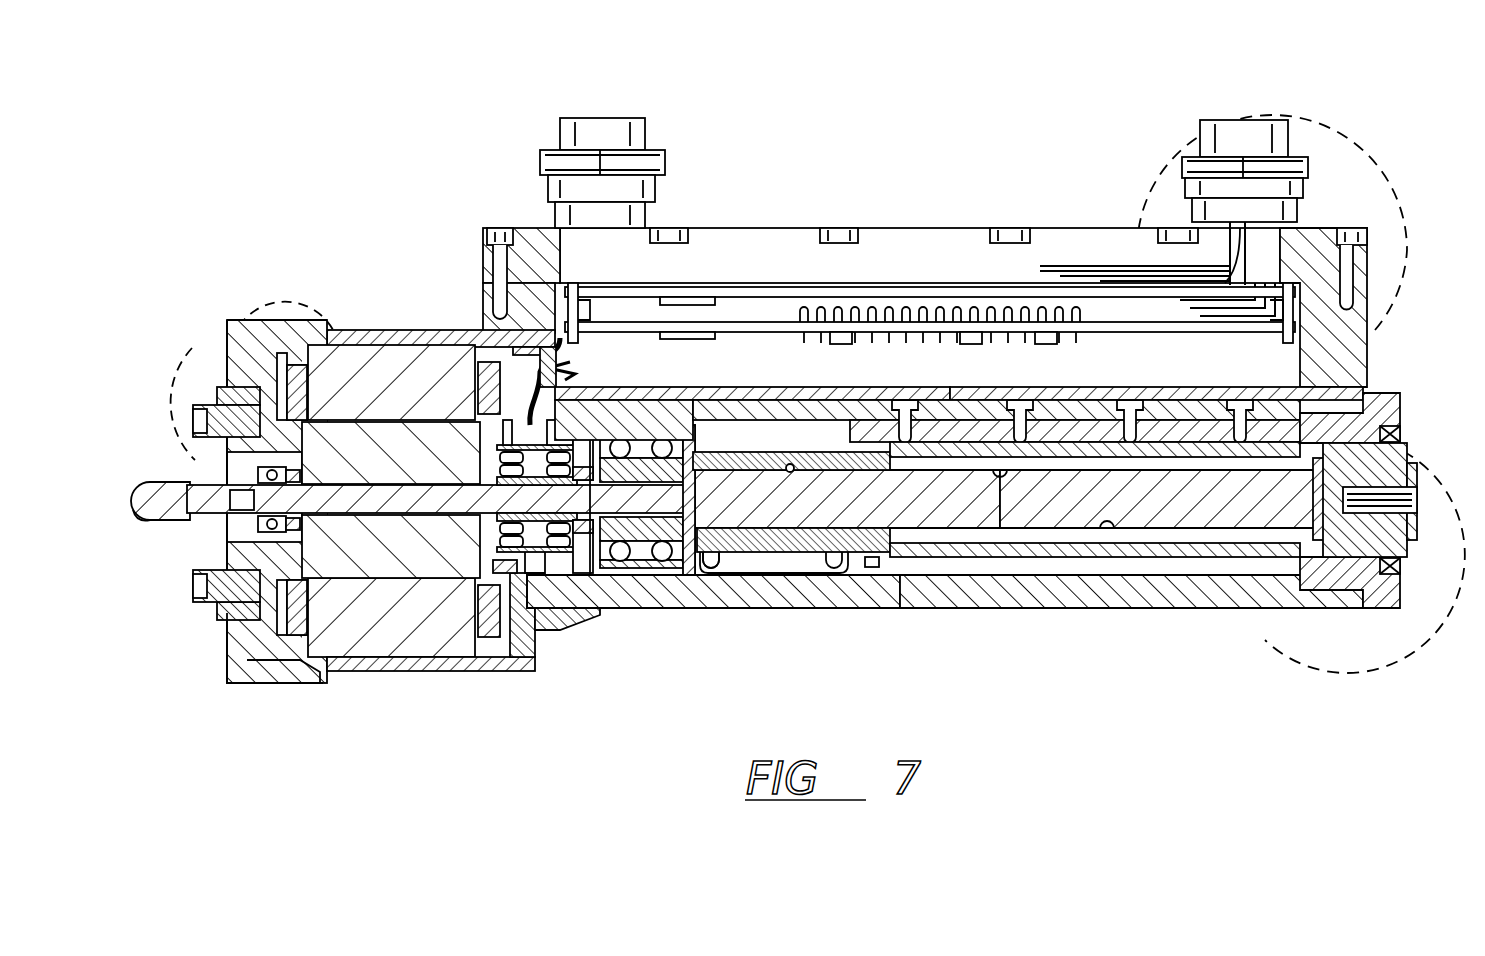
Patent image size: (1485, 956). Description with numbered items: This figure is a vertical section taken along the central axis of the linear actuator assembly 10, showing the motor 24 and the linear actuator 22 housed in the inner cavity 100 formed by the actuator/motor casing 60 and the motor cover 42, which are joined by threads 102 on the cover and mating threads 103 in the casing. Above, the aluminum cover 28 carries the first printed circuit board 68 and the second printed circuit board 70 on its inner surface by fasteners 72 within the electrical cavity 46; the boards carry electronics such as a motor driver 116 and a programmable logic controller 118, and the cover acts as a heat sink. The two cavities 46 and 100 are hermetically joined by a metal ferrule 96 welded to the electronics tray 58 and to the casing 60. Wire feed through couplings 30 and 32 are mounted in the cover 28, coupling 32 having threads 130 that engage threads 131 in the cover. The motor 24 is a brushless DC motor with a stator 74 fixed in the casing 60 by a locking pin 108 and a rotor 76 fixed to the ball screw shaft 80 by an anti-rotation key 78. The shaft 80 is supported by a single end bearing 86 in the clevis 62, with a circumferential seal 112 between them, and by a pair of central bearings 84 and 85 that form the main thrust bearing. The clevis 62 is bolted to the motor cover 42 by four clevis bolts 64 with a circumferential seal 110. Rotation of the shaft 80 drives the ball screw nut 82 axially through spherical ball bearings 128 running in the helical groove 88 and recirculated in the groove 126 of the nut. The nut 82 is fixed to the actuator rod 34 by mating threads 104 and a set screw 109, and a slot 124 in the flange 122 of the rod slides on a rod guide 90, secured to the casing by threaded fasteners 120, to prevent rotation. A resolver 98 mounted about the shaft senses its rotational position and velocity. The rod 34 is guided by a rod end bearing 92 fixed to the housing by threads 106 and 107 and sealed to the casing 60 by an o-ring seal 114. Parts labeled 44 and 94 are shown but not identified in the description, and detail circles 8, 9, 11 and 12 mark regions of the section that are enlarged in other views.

The linear actuator assembly 10 is at (905, 78).
The linear actuator 22 is at (1030, 608).
The motor 24 is at (393, 672).
The cover 28 is at (930, 263).
The wire feed through coupling 30 is at (600, 118).
The wire feed through coupling 32 is at (1243, 120).
The actuator rod 34 is at (1425, 520).
The motor cover 42 is at (232, 322).
The bolts 44 is at (504, 228).
The inner cavity 46 is at (806, 376).
The electronics tray 58 is at (1372, 335).
The actuator/motor casing 60 is at (1140, 608).
The clevis 62 is at (150, 482).
The clevis bolts 64 is at (193, 412).
The first printed circuit board 68 is at (808, 287).
The second printed circuit board 70 is at (748, 322).
The fasteners 72 is at (848, 343).
The stator 74 is at (438, 350).
The rotor 76 is at (345, 437).
The anti-rotation key 78 is at (405, 482).
The ball screw shaft 80 is at (992, 528).
The ball screw nut 82 is at (786, 552).
The bearing 84 is at (636, 568).
The bearing 85 is at (676, 575).
The end bearing 86 is at (262, 530).
The helical groove 88 is at (1108, 557).
The rod guide 90 is at (966, 408).
The rod end bearing 92 is at (1383, 395).
The seal 94 is at (1403, 437).
The metal ferrule 96 is at (578, 372).
The resolver 98 is at (556, 575).
The inner cavity 100 is at (716, 575).
The threads 102 is at (290, 415).
The mating threads 103 is at (297, 500).
The mating threads 104 is at (912, 608).
The threads 106 is at (1305, 590).
The complementary threads 107 is at (1324, 582).
The locking pin 108 is at (318, 683).
The set screw 109 is at (872, 568).
The circumferential seal 110 is at (252, 620).
The circumferential seal 112 is at (300, 546).
The o-ring seal 114 is at (1352, 608).
The motor driver 116 is at (690, 297).
The programmable logic controller 118 is at (698, 339).
The threaded fasteners 120 is at (1128, 410).
The flange 122 is at (850, 580).
The slot 124 is at (855, 449).
The raceway or groove 126 is at (790, 452).
The spherical ball bearings 128 is at (792, 473).
The threads 130 is at (1288, 237).
The threads 131 is at (1227, 269).
The detail callout 8 is at (182, 389).
The detail callout 9 is at (337, 262).
The detail callout 11 is at (1185, 120).
The detail callout 12 is at (1330, 690).